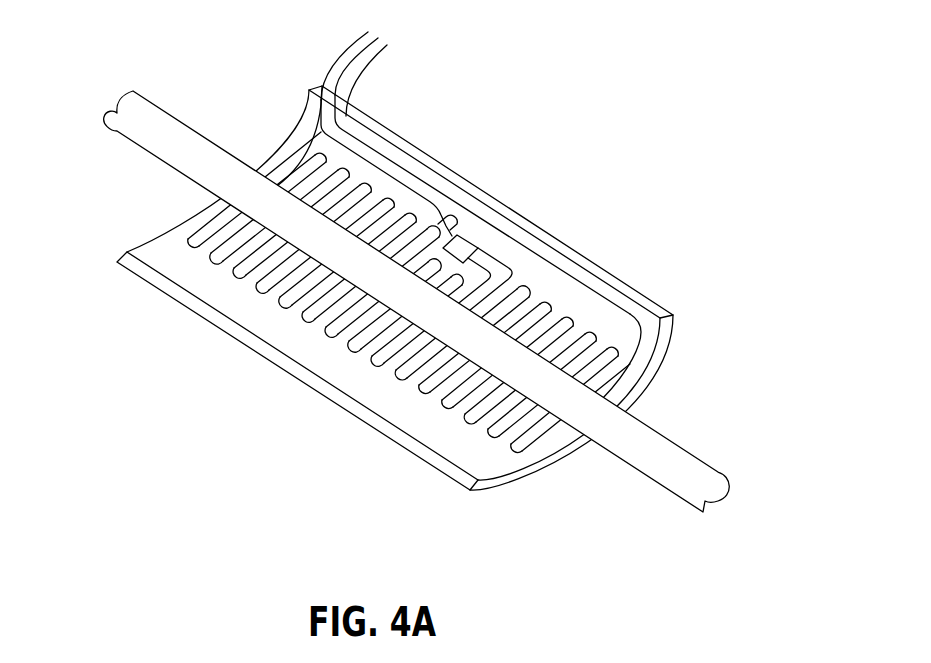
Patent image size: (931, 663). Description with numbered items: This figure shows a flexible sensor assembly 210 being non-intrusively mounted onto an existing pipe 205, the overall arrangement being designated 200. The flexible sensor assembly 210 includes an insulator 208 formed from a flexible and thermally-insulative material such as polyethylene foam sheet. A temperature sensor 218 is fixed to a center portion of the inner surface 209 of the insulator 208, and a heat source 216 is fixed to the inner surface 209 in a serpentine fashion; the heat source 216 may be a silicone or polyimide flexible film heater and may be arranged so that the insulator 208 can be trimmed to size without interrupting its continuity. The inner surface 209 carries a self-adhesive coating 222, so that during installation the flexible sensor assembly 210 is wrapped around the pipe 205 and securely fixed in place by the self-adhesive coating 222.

The sensor assembly 200 is at (653, 66).
The pipe 205 is at (650, 428).
The insulator 208 is at (510, 492).
The inner surface 209 is at (553, 442).
The flexible sensor assembly 210 is at (418, 130).
The heat source 216 is at (523, 276).
The temperature sensor 218 is at (465, 233).
The self-adhesive coating 222 is at (649, 342).